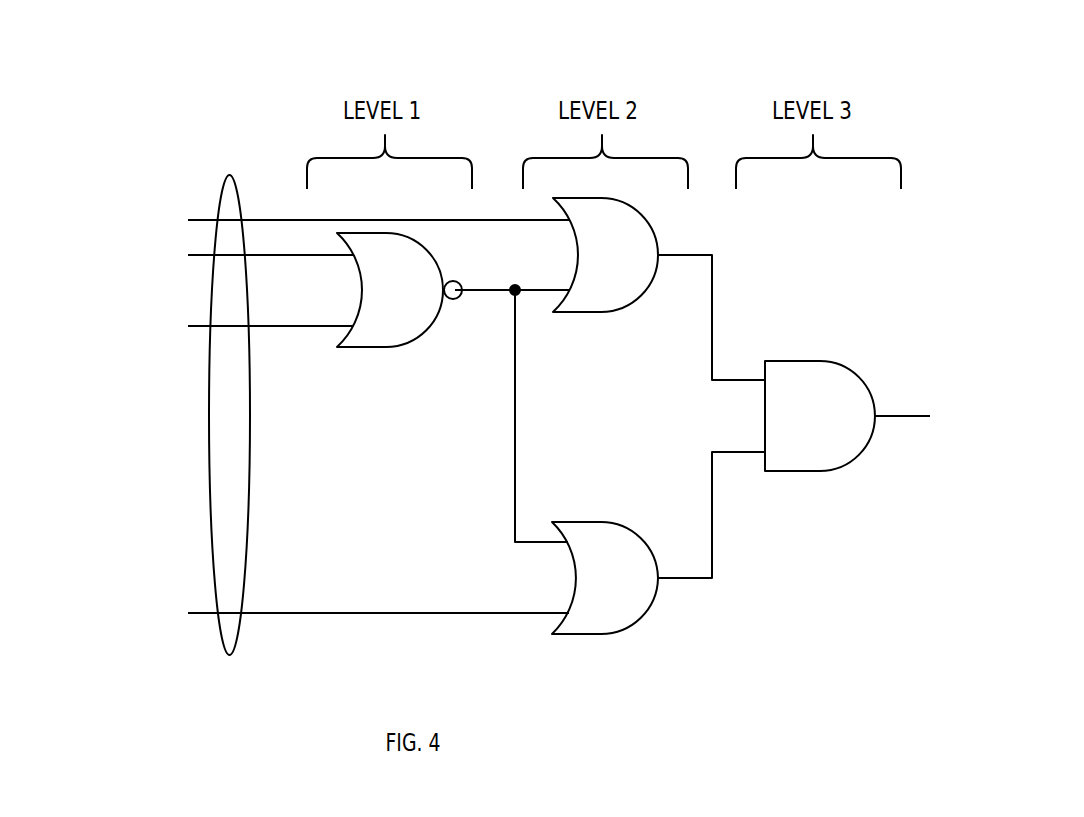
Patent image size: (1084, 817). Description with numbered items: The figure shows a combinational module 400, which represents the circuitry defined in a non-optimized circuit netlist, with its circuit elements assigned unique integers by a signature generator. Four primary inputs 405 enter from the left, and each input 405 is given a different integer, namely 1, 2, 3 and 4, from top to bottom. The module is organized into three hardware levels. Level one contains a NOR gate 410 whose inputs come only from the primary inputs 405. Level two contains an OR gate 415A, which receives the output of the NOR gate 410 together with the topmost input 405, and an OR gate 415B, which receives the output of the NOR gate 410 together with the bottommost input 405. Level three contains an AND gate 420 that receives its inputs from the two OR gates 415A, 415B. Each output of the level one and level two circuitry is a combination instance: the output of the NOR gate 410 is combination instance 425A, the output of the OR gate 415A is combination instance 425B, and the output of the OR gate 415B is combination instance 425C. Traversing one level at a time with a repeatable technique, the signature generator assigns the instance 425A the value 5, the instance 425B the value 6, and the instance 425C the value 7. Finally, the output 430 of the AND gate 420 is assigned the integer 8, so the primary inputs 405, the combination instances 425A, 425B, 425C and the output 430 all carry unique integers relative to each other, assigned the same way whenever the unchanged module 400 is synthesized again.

The combinational module 400 is at (498, 389).
The inputs 405 is at (146, 415).
The NOR gate 410 is at (372, 356).
The OR gate 415A is at (605, 320).
The OR gate 415B is at (605, 645).
The AND gate 420 is at (803, 483).
The combination instance 425A is at (467, 322).
The combination instance 425B is at (665, 288).
The combination instance 425C is at (672, 615).
The output 430 is at (913, 483).
The unique integer of first input 1 is at (367, 221).
The unique integer of second input 2 is at (259, 256).
The unique integer of third input 3 is at (259, 327).
The unique integer of fourth input 4 is at (367, 614).
The unique integer of combination instance 425A 5 is at (516, 398).
The unique integer of combination instance 425B 6 is at (711, 302).
The unique integer of combination instance 425C 7 is at (711, 515).
The unique integer of output 8 is at (910, 419).